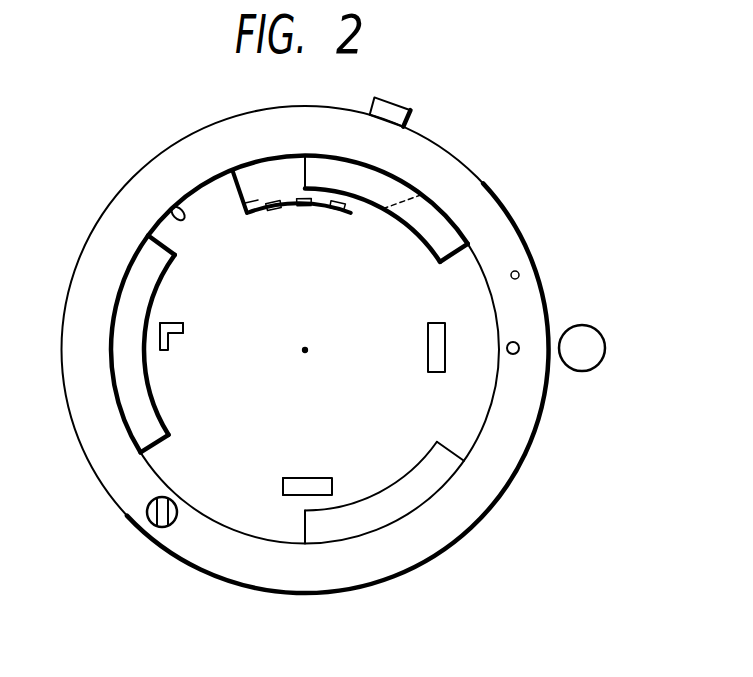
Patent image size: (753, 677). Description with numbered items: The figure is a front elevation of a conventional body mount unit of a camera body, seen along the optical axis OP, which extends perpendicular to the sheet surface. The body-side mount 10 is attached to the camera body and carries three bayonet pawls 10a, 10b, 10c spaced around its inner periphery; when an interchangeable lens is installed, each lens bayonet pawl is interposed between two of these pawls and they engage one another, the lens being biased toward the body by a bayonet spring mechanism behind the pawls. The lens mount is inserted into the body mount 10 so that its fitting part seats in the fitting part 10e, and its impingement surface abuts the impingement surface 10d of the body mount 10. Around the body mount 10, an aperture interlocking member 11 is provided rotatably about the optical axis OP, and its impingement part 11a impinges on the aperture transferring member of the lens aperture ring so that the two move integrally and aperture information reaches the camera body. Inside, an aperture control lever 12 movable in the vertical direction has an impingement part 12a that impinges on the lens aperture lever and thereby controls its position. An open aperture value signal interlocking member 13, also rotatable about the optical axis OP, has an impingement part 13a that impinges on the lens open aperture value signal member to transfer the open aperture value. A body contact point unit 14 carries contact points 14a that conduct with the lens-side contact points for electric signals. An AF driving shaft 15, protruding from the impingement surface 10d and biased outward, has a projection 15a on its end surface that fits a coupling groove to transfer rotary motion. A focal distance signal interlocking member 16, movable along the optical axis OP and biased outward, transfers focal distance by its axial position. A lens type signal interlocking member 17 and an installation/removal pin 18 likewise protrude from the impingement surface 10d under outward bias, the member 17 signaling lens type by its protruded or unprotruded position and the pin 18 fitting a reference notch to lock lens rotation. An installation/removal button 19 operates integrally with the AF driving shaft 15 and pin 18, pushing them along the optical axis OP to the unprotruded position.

The body-side mount 10 is at (487, 180).
The bayonet pawl 10a is at (417, 222).
The bayonet pawl 10b is at (395, 485).
The bayonet pawl 10c is at (148, 398).
The impingement surface 10d is at (380, 563).
The fitting part 10e is at (172, 208).
The aperture interlocking member 11 is at (393, 110).
The impingement part 11a is at (413, 117).
The aperture control lever 12 is at (175, 343).
The impingement part 12a is at (173, 323).
The open aperture value signal interlocking member 13 is at (303, 483).
The impingement part 13a is at (284, 481).
The body contact point unit 14 is at (254, 203).
The contact points 14a is at (338, 213).
The AF driving shaft 15 is at (148, 512).
The projection 15a is at (162, 523).
The focal distance signal interlocking member 16 is at (432, 368).
The lens type signal interlocking member 17 is at (518, 275).
The installation/removal pin 18 is at (520, 352).
The installation/removal button 19 is at (585, 337).
The optical axis OP is at (308, 350).